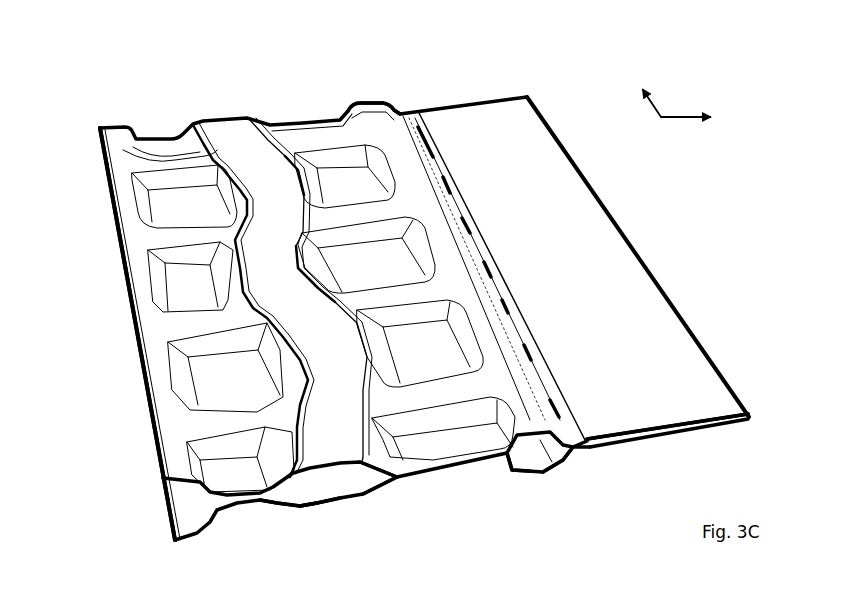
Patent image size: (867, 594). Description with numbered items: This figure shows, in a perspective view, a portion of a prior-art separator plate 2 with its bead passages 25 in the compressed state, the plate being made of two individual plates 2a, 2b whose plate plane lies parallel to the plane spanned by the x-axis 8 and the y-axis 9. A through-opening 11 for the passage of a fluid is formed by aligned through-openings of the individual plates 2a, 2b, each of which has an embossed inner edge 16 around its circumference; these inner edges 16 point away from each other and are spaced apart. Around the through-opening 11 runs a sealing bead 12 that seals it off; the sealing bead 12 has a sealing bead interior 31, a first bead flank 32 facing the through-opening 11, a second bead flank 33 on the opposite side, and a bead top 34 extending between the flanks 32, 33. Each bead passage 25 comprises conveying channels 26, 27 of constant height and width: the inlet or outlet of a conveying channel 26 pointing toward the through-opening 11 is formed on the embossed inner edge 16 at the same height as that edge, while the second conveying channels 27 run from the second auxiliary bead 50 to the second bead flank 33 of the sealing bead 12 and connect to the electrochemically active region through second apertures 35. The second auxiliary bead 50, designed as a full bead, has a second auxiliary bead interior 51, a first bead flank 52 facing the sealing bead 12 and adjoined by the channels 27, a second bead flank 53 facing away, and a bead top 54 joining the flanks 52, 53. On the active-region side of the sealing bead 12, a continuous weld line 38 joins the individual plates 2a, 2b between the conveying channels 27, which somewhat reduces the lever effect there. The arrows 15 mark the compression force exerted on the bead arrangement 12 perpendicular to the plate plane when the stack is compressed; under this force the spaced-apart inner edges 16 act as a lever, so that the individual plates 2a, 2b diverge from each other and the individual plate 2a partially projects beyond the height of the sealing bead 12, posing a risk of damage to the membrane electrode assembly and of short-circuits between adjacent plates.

The separator plate 2 is at (580, 222).
The individual plate 2a is at (683, 356).
The individual plate 2b is at (733, 428).
The x-axis 8 is at (676, 120).
The y-axis 9 is at (654, 112).
The through-opening 11 is at (110, 389).
The sealing bead 12 is at (248, 153).
The arrows 15 is at (340, 460).
The embossed inner edge 16 is at (120, 267).
The bead passage 25 is at (178, 80).
The conveying channel 26 is at (165, 160).
The second conveying channel 27 is at (320, 142).
The sealing bead interior 31 is at (320, 323).
The first bead flank 32 is at (281, 509).
The second bead flank 33 is at (388, 487).
The bead top 34 is at (320, 508).
The second aperture 35 is at (537, 384).
The weld line 38 is at (580, 418).
The second auxiliary bead 50 is at (408, 178).
The second auxiliary bead interior 51 is at (532, 452).
The first bead flank 52 is at (512, 470).
The second bead flank 53 is at (568, 457).
The bead top 54 is at (374, 117).